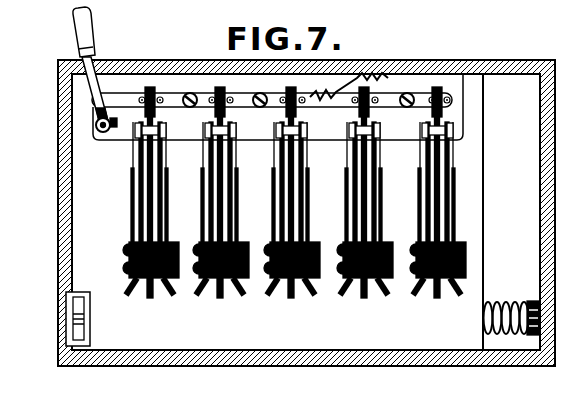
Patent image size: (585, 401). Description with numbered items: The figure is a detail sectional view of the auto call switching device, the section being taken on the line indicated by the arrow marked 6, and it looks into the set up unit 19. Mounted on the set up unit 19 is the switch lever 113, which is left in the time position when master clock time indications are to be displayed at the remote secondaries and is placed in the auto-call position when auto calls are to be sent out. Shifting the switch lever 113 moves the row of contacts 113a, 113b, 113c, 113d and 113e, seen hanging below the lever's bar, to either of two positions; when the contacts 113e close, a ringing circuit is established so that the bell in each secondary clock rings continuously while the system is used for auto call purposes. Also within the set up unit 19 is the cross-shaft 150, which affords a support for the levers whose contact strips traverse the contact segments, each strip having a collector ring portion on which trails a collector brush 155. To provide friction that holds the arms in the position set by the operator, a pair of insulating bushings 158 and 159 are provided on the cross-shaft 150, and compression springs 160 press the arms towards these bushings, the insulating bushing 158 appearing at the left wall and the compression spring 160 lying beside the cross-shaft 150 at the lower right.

The set up unit 19 is at (489, 63).
The switch lever 113 is at (84, 30).
The contact 113a is at (145, 145).
The contact 113b is at (229, 146).
The contact 113c is at (299, 146).
The contact 113d is at (372, 146).
The contact 113e is at (440, 147).
The insulating bushing 158 is at (58, 329).
The compression spring 160 is at (490, 301).
The cross-shaft 150 is at (508, 304).
The insulating bushing 159 is at (195, 8).
The collector brush 155 is at (362, 0).
The section line 6 is at (497, 10).